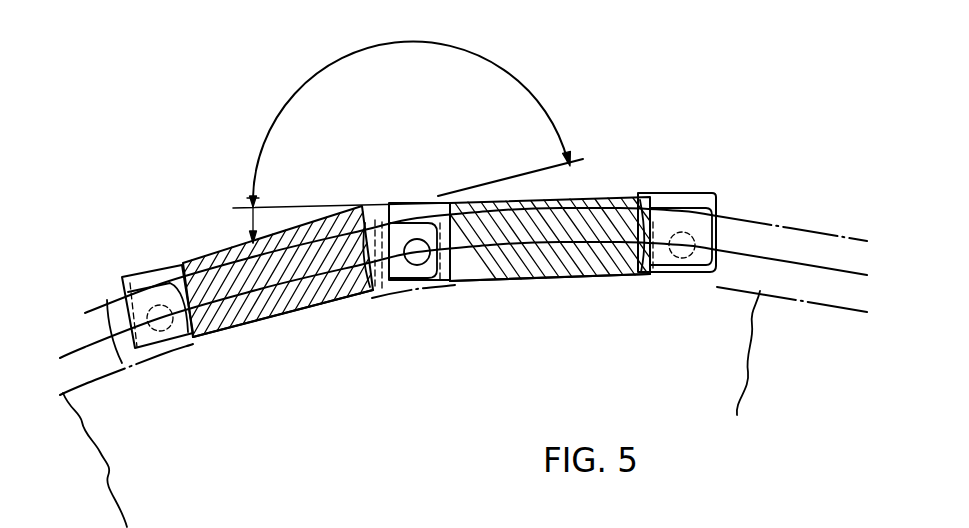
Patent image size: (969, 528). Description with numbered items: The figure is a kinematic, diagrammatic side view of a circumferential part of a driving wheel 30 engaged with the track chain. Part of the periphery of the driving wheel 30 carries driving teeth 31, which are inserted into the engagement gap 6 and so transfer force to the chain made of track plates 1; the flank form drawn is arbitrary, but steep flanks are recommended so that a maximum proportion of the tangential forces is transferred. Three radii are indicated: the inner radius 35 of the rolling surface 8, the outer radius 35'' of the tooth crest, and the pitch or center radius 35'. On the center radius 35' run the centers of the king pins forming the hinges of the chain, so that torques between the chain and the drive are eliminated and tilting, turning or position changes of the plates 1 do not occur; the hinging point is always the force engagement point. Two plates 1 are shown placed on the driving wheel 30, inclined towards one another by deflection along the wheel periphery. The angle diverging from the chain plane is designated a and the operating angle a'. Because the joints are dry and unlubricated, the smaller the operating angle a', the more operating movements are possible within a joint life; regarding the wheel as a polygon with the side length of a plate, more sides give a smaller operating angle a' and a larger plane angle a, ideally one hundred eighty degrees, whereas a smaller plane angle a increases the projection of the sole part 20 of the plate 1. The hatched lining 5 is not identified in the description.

The track plate 1 is at (137, 276).
The lining plate 5 is at (357, 214).
The engagement gap 6 is at (173, 266).
The rolling surface 8 is at (287, 313).
The sole part 20 is at (438, 195).
The driving wheel 30 is at (730, 375).
The driving teeth 31 is at (117, 318).
The inner radius 35 is at (463, 299).
The pitch or center radius 35' is at (463, 276).
The outer radius of the tooth crest 35'' is at (476, 241).
The angle diverging from the plane a is at (408, 107).
The operating angle a' is at (337, 219).